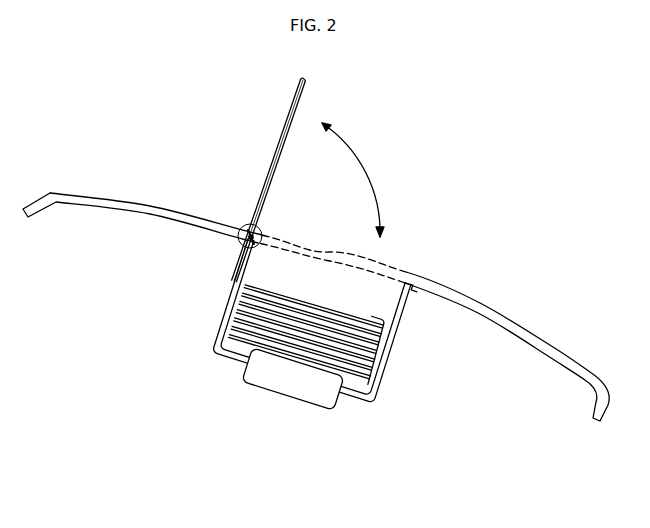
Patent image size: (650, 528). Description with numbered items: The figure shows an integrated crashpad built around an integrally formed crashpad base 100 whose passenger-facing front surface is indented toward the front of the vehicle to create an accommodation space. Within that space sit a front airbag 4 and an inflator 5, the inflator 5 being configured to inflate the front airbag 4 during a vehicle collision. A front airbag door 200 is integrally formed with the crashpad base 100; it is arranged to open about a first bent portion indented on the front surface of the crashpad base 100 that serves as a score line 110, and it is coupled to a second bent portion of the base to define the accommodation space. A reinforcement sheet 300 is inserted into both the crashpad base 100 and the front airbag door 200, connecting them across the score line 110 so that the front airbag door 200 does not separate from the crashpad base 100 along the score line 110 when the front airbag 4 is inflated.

The crashpad base 100 is at (100, 204).
The score line 110 is at (241, 240).
The front airbag door 200 is at (279, 136).
The reinforcement sheet 300 is at (258, 194).
The front airbag 4 is at (353, 312).
The inflator 5 is at (292, 388).